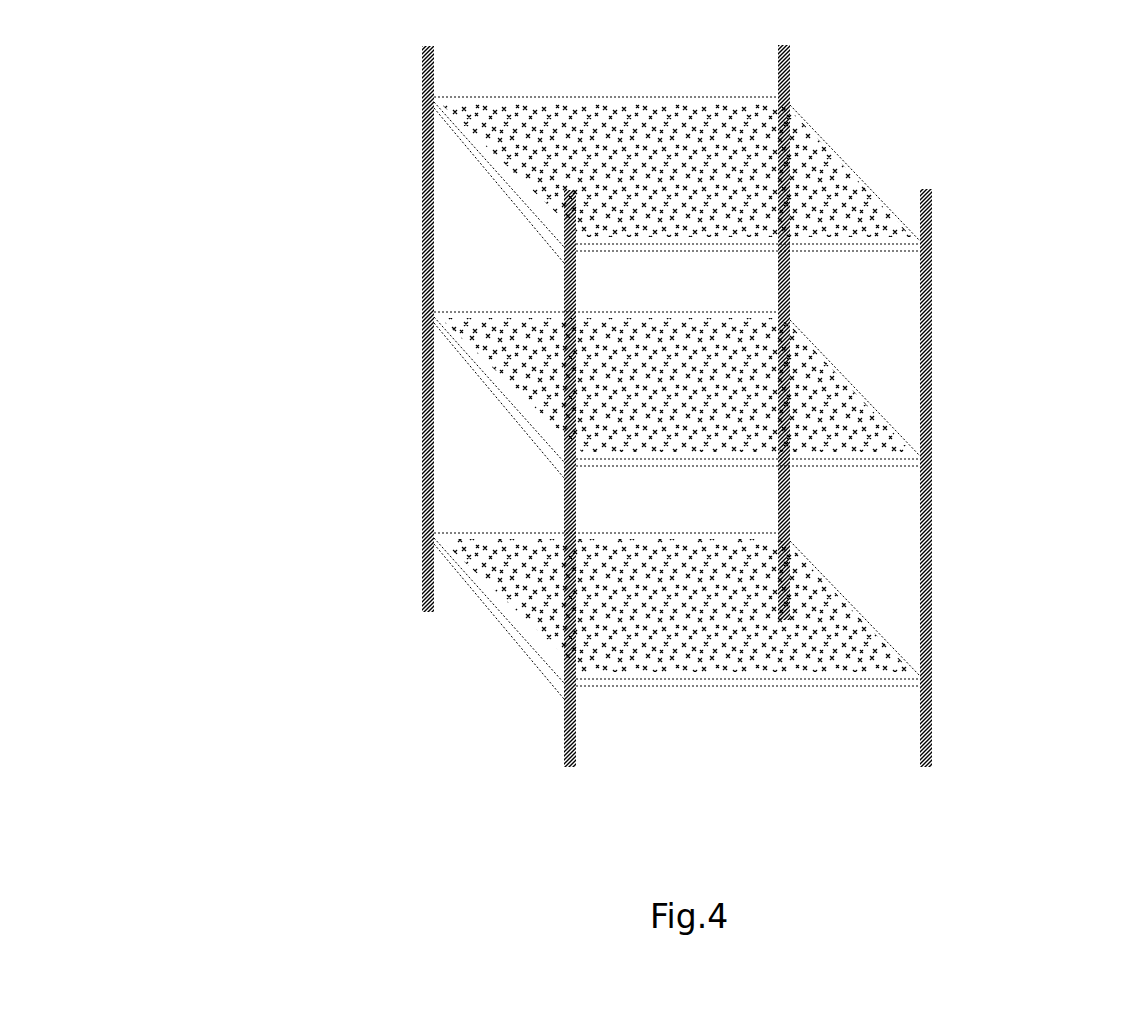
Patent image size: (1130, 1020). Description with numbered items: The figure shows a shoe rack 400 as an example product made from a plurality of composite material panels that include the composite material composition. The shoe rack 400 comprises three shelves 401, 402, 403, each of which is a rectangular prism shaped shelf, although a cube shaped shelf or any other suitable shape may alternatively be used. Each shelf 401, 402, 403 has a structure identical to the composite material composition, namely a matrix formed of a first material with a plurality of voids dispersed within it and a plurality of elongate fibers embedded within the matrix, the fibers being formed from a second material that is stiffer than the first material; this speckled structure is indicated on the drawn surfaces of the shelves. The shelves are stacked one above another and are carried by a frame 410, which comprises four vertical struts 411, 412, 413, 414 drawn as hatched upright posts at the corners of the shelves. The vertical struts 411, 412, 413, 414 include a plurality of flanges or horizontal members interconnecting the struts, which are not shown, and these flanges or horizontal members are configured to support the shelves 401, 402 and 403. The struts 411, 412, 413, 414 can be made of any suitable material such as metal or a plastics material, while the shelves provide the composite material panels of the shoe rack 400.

The shoe rack 400 is at (311, 303).
The shelf 401 is at (518, 147).
The shelf 402 is at (815, 403).
The shelf 403 is at (865, 650).
The frame 410 is at (408, 193).
The vertical strut 411 is at (423, 71).
The vertical strut 412 is at (562, 500).
The vertical strut 413 is at (792, 61).
The vertical strut 414 is at (932, 211).